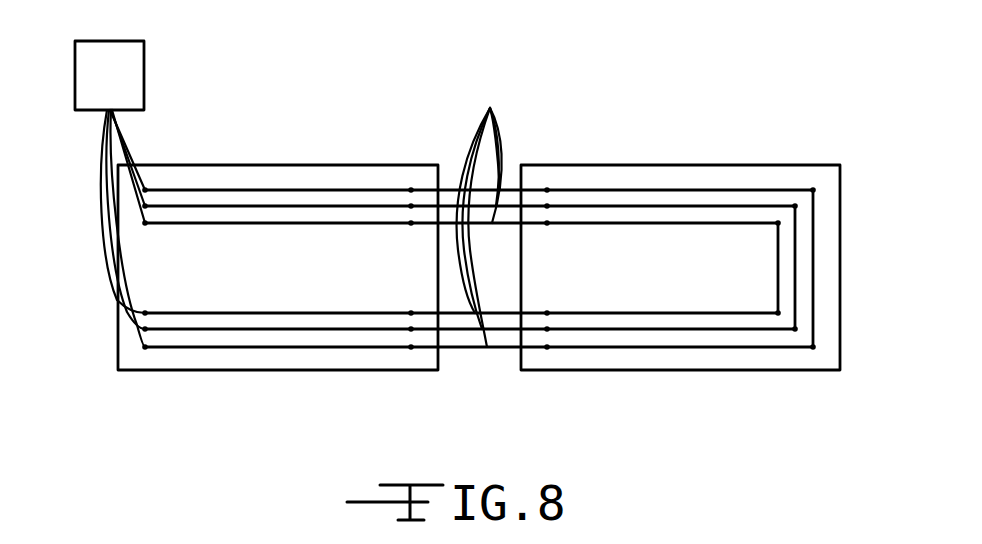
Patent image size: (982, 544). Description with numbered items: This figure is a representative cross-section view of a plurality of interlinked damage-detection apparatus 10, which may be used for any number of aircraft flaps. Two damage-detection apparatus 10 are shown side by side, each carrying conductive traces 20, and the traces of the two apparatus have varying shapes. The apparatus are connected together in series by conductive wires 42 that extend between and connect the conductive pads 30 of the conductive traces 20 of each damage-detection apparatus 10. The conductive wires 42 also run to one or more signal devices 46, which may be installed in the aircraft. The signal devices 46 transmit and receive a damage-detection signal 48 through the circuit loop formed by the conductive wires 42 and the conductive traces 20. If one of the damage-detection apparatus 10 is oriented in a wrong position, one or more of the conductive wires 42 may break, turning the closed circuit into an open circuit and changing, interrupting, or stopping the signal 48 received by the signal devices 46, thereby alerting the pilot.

The interlinked damage-detection apparatus 10 is at (357, 165).
The conductive traces 20 is at (290, 223).
The conductive pads 30 is at (145, 223).
The conductive wires 42 is at (277, 229).
The damage-detection signal 48 is at (112, 180).
The signal devices 46 is at (109, 75).